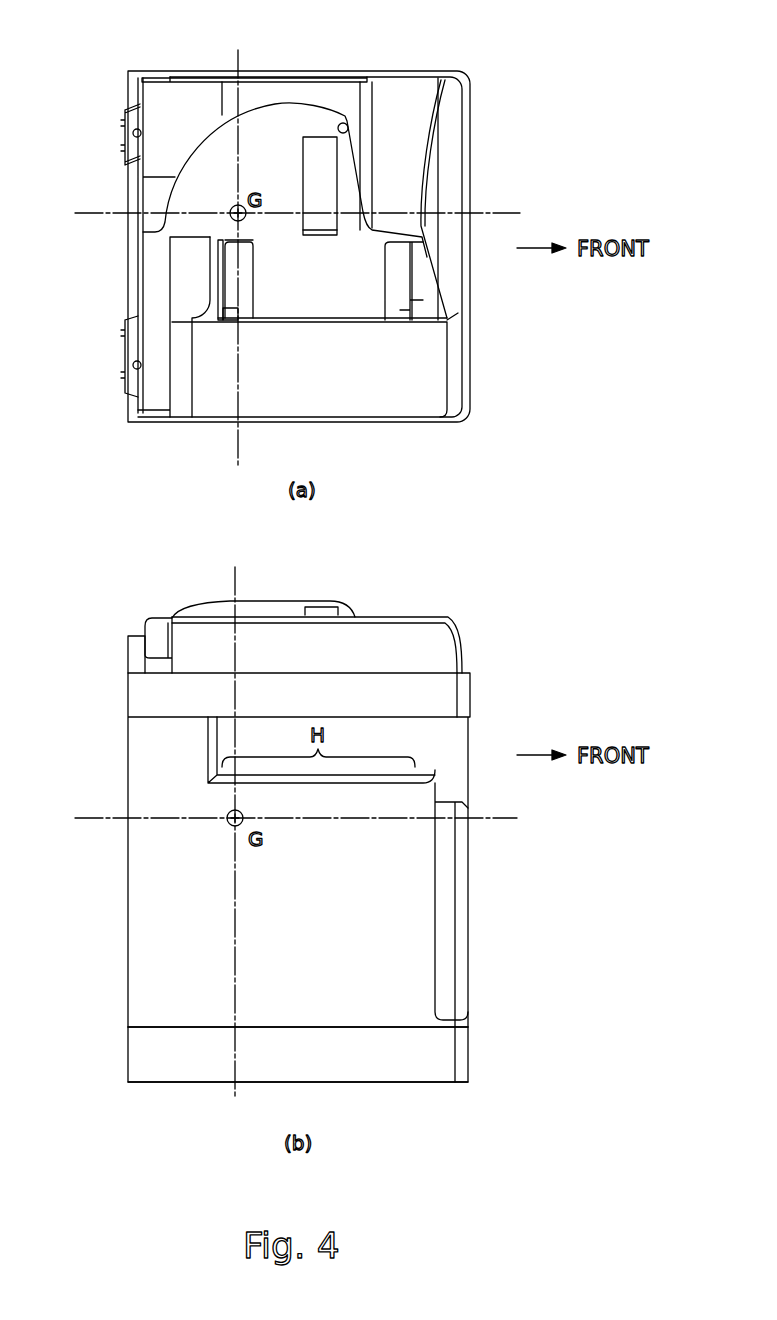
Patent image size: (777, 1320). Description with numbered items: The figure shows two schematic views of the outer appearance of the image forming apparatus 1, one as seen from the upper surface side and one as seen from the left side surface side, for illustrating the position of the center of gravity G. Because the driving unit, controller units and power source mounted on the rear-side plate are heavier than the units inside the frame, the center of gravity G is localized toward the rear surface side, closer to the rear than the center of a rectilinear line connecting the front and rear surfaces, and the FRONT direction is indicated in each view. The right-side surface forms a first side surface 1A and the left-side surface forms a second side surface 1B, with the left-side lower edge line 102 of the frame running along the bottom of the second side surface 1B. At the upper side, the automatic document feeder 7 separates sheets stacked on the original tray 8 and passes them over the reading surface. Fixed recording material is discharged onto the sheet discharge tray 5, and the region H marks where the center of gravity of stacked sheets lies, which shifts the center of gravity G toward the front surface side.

The image forming apparatus 1 is at (103, 97).
The first side surface 1A is at (392, 77).
The second side surface 1B is at (385, 425).
The sheet discharge tray 5 is at (423, 771).
The automatic document feeder 7 is at (422, 372).
The original tray 8 is at (297, 118).
The left-side lower edge line 102 is at (428, 1083).